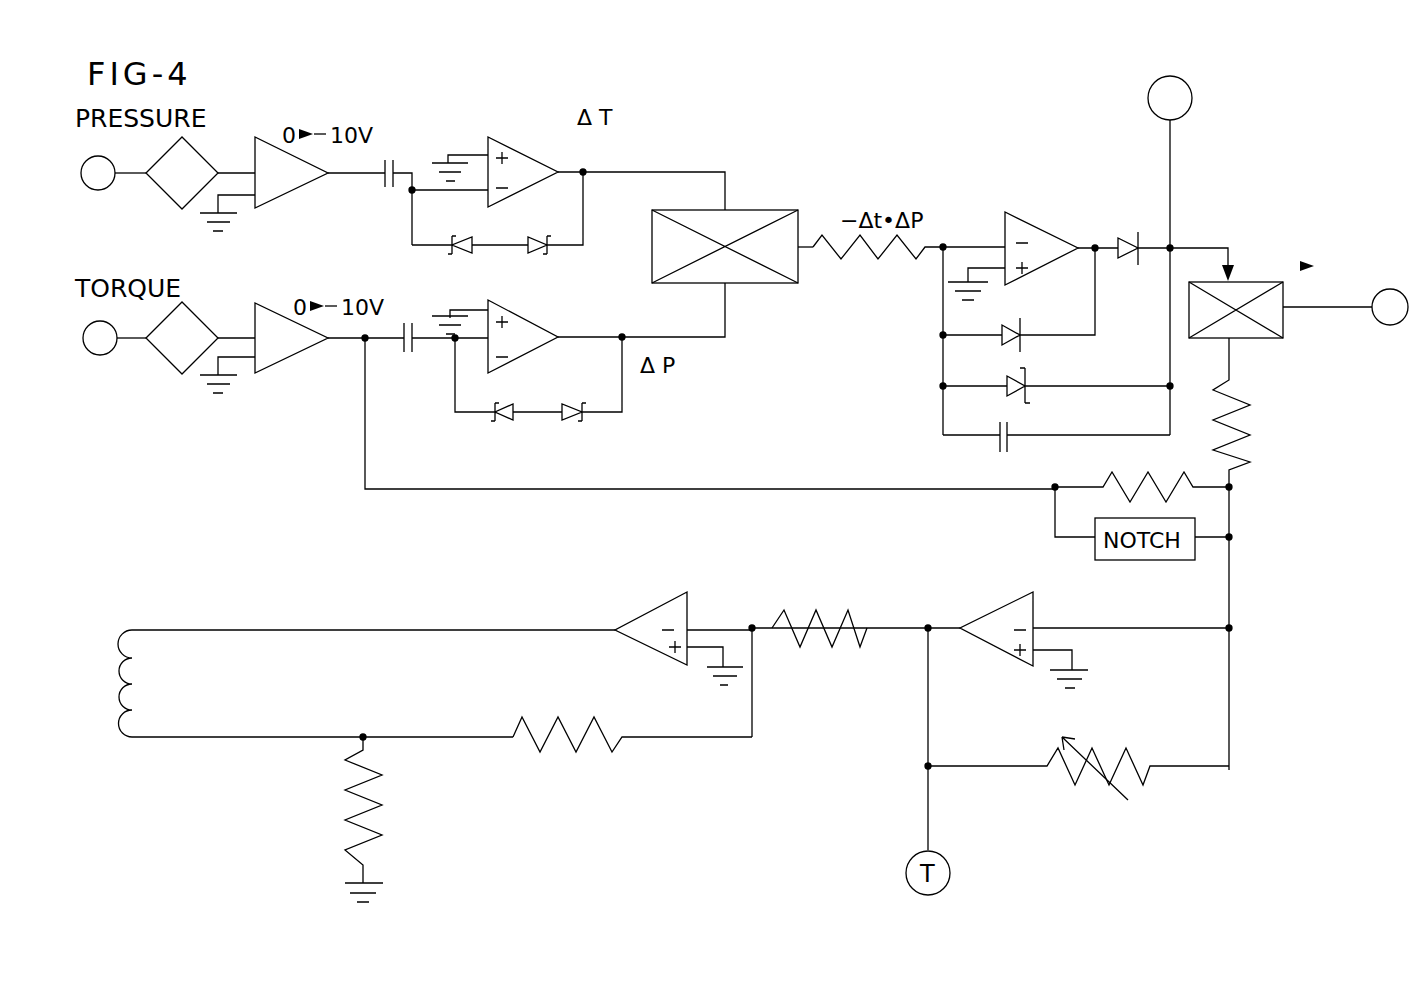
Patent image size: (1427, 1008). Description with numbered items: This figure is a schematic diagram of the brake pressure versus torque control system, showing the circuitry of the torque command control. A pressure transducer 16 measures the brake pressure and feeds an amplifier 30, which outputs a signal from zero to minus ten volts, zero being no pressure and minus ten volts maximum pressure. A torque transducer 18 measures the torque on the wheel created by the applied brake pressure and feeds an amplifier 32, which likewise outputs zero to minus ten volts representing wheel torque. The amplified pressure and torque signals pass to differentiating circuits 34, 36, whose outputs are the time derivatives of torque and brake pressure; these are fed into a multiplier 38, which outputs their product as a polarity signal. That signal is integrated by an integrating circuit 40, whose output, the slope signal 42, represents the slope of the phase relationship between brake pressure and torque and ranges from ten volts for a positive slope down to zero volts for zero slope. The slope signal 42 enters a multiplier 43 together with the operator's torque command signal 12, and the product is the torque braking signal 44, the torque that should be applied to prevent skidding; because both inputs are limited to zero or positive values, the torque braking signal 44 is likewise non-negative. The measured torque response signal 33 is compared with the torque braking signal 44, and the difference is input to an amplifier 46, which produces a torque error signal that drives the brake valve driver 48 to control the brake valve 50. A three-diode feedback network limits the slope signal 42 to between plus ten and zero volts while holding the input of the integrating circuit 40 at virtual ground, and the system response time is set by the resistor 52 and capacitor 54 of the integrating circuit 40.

The torque command signal 12 is at (1390, 325).
The pressure transducer 16 is at (198, 155).
The torque transducer 18 is at (203, 317).
The amplifier 30 is at (290, 193).
The amplifier 32 is at (280, 365).
The measured torque response signal 33 is at (365, 457).
The differentiating circuit 34 is at (521, 147).
The differentiating circuit 36 is at (527, 317).
The multiplier 38 is at (762, 210).
The integrating circuit 40 is at (1037, 223).
The slope signal 42 is at (1232, 262).
The multiplier 43 is at (1285, 320).
The torque braking signal 44 is at (1232, 360).
The amplifier 46 is at (1002, 603).
The brake valve driver 48 is at (650, 607).
The brake valve 50 is at (200, 617).
The resistor 52 is at (878, 258).
The capacitor 54 is at (1000, 452).